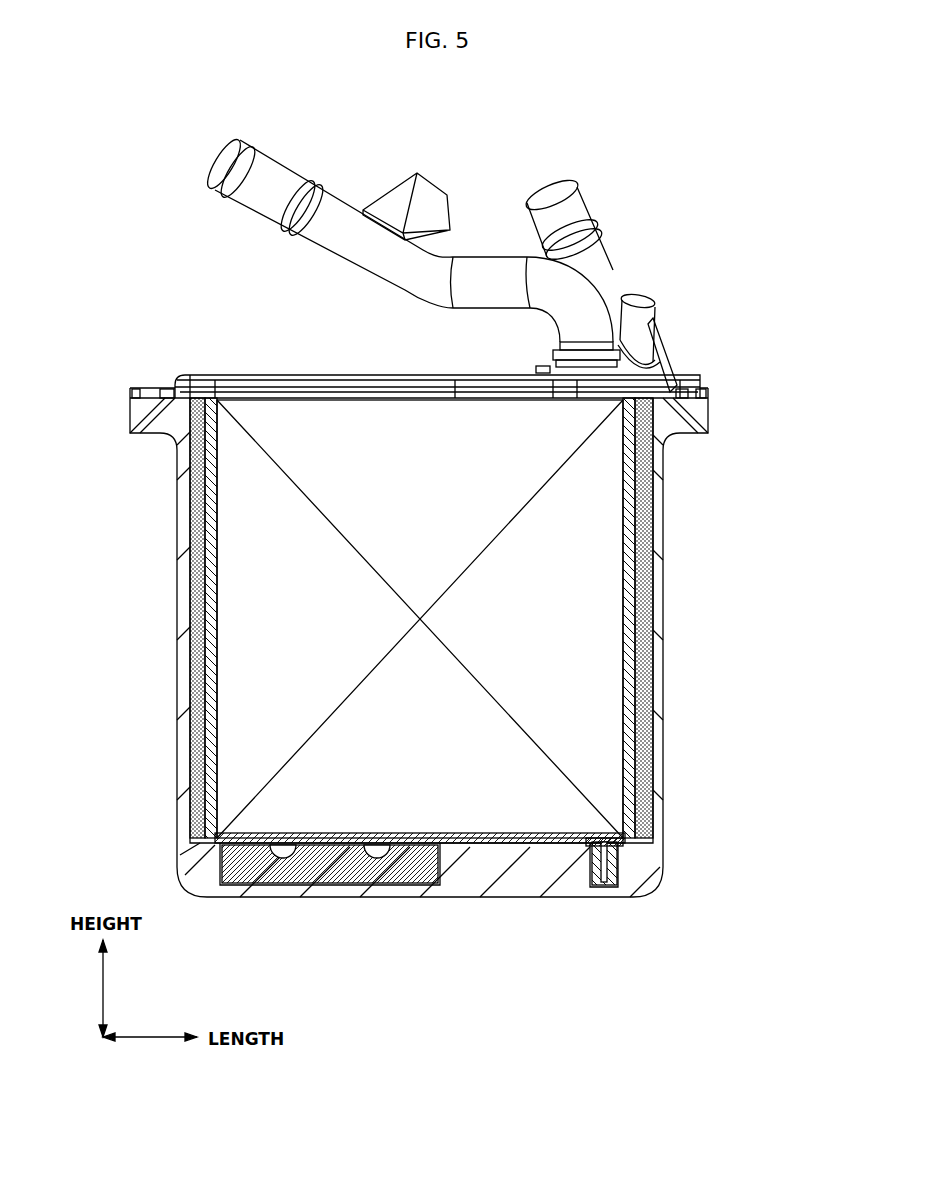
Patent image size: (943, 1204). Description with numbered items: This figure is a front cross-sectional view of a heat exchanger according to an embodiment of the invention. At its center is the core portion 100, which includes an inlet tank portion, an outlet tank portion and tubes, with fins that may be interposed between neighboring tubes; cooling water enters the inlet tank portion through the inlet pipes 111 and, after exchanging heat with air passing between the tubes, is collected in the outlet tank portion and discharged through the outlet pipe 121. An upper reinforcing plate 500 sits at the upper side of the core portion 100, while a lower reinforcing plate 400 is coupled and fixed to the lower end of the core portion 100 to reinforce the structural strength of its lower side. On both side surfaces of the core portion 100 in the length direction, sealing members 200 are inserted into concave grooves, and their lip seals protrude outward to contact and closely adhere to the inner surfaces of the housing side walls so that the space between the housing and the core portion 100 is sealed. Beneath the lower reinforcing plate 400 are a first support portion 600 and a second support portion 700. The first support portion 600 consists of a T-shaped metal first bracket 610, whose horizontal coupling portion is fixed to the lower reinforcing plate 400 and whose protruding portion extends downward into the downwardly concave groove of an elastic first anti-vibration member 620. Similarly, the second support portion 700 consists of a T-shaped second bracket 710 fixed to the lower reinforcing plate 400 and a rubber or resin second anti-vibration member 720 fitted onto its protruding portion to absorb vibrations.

The core portion 100 is at (600, 485).
The inlet pipes 111 is at (275, 172).
The outlet pipe 121 is at (558, 205).
The sealing members 200 is at (200, 545).
The lower reinforcing plate 400 is at (570, 832).
The upper reinforcing plate 500 is at (234, 372).
The first support portion 600 is at (698, 894).
The first bracket 610 is at (625, 882).
The first anti-vibration member 620 is at (615, 885).
The second support portion 700 is at (338, 930).
The second bracket 710 is at (400, 890).
The second anti-vibration member 720 is at (428, 890).